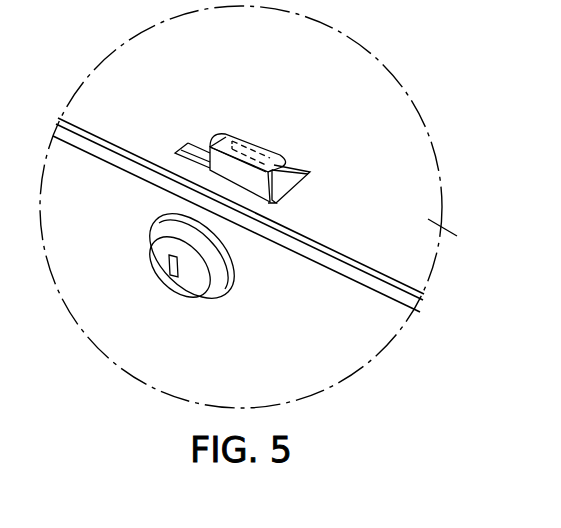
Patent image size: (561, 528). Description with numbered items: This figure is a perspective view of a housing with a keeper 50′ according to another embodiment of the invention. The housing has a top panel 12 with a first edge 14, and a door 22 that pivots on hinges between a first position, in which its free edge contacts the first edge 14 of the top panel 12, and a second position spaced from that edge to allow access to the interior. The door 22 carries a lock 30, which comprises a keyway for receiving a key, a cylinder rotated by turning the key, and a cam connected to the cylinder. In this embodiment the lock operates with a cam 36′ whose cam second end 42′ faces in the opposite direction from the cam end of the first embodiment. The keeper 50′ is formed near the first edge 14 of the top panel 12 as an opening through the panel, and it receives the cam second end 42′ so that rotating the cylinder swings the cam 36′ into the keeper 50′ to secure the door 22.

The top panel 12 is at (456, 233).
The first edge 14 is at (332, 243).
The door 22 is at (375, 351).
The lock 30 is at (188, 302).
The cam 36′ is at (204, 139).
The cam second end 42′ is at (242, 153).
The keeper 50′ is at (309, 153).